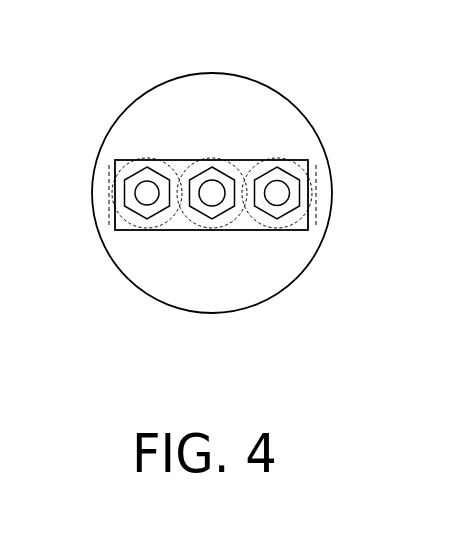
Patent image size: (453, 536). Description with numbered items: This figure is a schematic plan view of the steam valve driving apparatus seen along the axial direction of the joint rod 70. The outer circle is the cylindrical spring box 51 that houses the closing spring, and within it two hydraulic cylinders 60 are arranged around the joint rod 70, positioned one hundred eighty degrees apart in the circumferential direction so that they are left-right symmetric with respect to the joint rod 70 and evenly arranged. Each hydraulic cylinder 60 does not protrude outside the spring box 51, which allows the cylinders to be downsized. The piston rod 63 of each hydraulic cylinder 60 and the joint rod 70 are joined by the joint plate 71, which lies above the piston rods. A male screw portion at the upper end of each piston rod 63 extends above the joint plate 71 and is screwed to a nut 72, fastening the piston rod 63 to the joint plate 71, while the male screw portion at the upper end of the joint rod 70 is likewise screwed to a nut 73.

The spring box 51 is at (283, 93).
The hydraulic cylinder 60 is at (99, 191).
The piston rod 63 is at (151, 205).
The joint rod 70 is at (207, 205).
The joint plate 71 is at (190, 160).
The nut 72 is at (136, 170).
The nut 73 is at (230, 167).